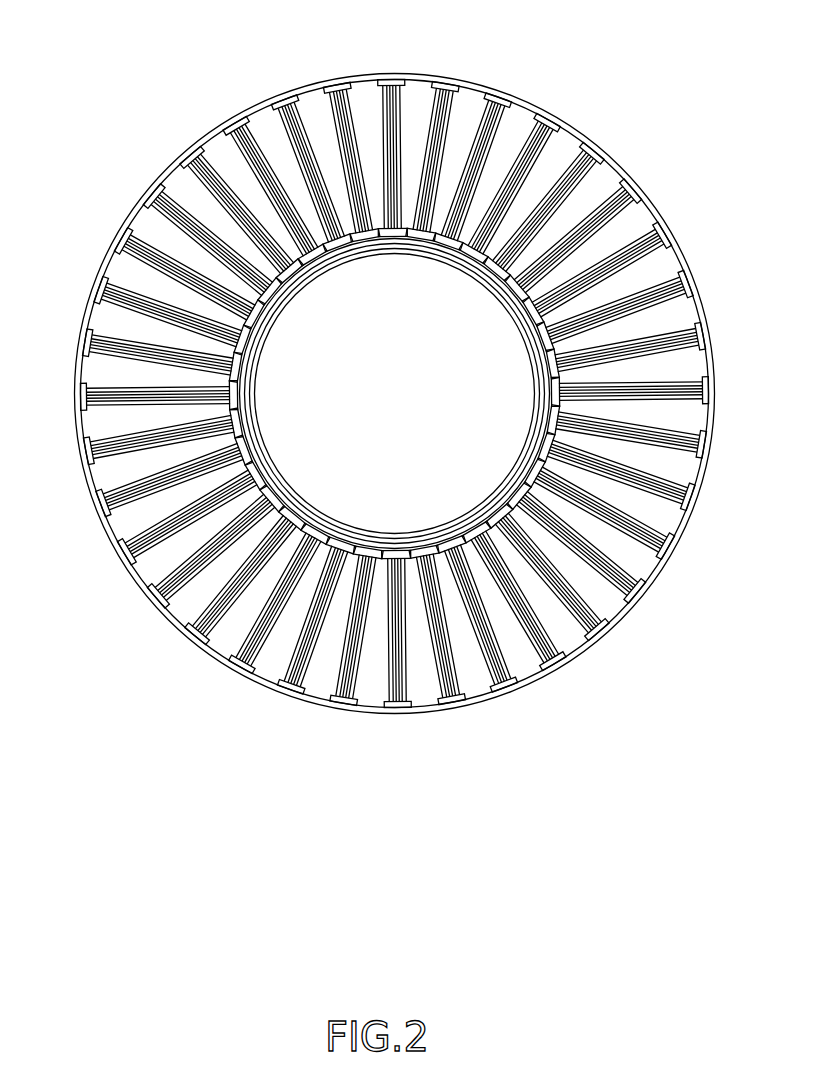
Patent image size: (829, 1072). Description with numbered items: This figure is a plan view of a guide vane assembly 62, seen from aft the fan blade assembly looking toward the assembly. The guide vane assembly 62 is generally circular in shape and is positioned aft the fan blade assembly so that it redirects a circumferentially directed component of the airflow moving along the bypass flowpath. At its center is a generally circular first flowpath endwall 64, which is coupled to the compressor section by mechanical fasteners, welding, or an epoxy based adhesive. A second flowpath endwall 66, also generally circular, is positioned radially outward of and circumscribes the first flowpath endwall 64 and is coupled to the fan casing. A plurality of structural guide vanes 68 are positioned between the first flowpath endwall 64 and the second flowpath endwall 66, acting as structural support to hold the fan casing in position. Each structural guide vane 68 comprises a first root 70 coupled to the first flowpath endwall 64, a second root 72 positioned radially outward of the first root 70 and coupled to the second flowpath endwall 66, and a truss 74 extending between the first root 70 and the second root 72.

The guide vane assembly 62 is at (545, 62).
The first flowpath endwall 64 is at (447, 258).
The second flowpath endwall 66 is at (390, 72).
The structural guide vane 68 is at (630, 242).
The first root 70 is at (250, 340).
The second root 72 is at (122, 238).
The truss 74 is at (605, 288).